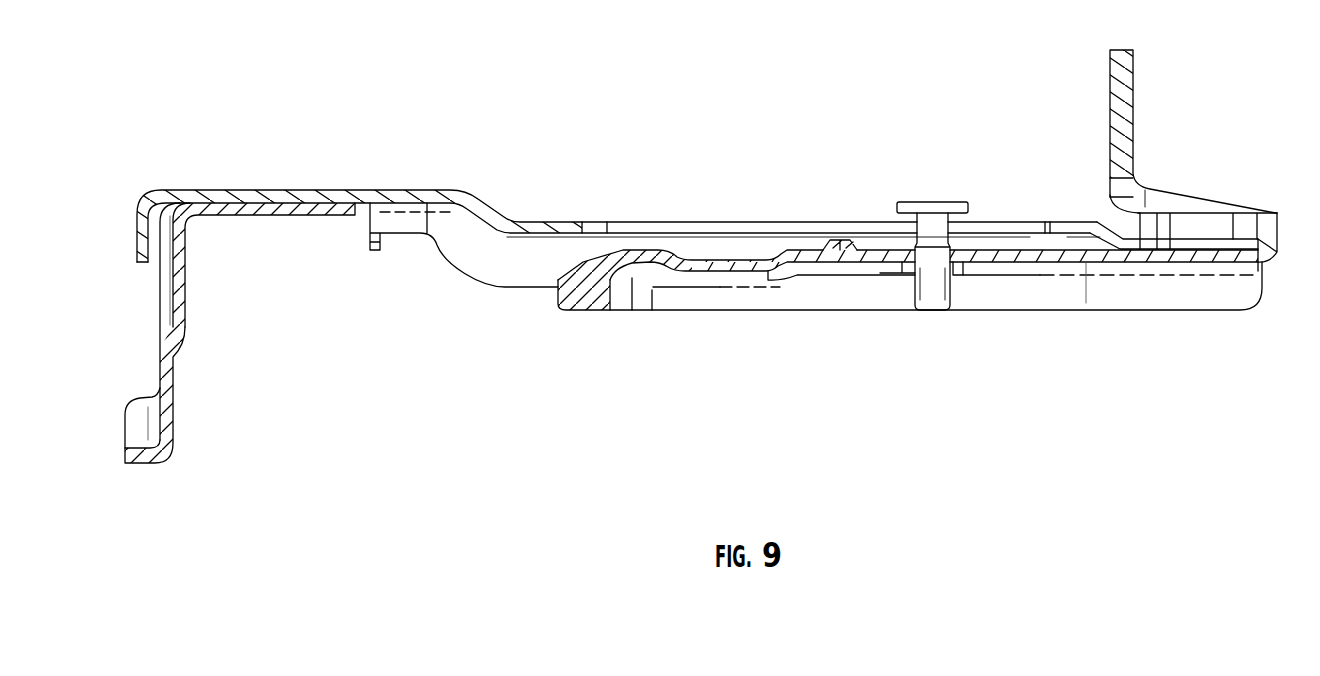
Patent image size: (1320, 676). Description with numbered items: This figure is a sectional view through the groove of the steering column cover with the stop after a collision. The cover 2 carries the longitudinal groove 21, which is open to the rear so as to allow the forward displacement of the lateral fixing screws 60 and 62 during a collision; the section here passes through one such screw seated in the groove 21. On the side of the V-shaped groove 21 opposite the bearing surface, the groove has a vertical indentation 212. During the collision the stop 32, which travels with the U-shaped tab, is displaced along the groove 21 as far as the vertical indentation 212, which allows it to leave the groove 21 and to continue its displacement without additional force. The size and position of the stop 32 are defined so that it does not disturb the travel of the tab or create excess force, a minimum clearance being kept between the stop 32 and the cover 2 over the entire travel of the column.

The cover 2 is at (1124, 110).
The longitudinal groove 21 is at (664, 232).
The vertical indentation 212 is at (1090, 224).
The stop 32 is at (846, 252).
The lateral fixing screw 60 is at (927, 203).
The lateral fixing screw 62 is at (927, 203).